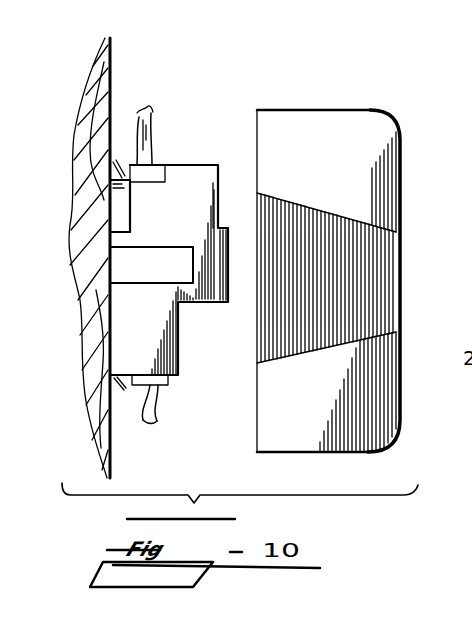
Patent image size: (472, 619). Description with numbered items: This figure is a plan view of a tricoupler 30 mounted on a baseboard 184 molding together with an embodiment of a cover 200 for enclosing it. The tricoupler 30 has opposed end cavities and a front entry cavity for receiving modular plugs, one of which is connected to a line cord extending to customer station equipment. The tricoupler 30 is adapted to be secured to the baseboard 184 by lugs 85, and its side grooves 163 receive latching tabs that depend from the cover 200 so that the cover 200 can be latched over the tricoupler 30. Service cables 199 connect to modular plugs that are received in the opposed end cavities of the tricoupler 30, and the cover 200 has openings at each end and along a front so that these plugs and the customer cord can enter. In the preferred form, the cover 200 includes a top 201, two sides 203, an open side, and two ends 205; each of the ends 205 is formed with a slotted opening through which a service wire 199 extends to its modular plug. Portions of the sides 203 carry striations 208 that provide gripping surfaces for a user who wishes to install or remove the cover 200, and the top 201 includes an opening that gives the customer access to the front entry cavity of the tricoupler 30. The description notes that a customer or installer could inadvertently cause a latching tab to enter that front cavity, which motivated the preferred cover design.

The baseboard 184 is at (108, 62).
The lugs 85 is at (117, 201).
The tricoupler 30 is at (199, 340).
The side grooves 163 is at (132, 260).
The service cables 199 is at (150, 120).
The cover 200 is at (272, 109).
The ends 205 is at (322, 110).
The sides 203 is at (378, 142).
The striations 208 is at (378, 250).
The top 201 is at (400, 402).